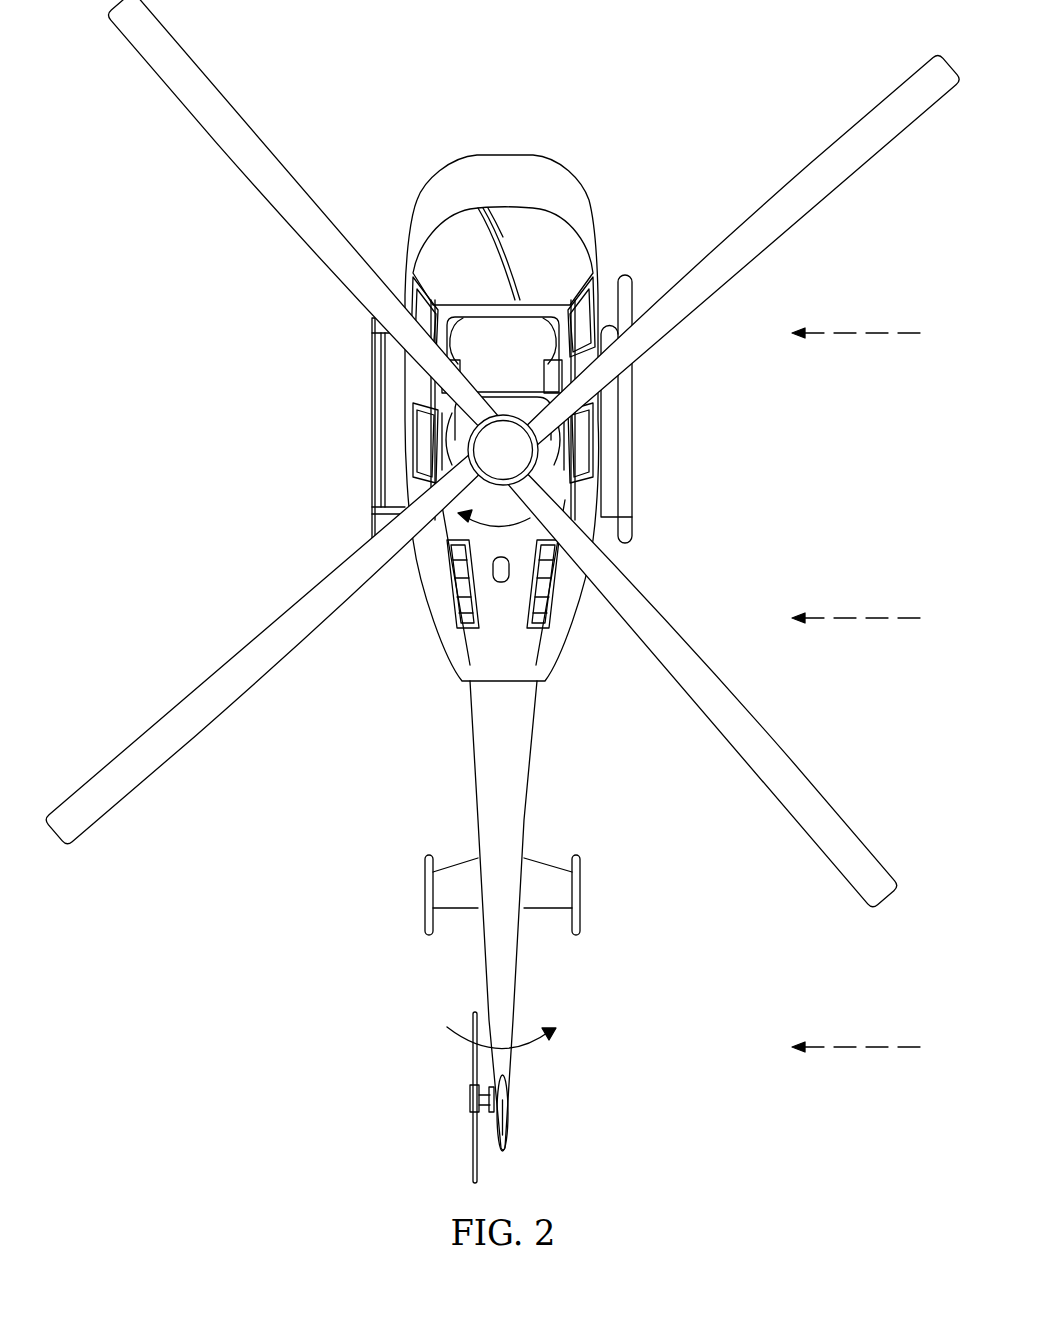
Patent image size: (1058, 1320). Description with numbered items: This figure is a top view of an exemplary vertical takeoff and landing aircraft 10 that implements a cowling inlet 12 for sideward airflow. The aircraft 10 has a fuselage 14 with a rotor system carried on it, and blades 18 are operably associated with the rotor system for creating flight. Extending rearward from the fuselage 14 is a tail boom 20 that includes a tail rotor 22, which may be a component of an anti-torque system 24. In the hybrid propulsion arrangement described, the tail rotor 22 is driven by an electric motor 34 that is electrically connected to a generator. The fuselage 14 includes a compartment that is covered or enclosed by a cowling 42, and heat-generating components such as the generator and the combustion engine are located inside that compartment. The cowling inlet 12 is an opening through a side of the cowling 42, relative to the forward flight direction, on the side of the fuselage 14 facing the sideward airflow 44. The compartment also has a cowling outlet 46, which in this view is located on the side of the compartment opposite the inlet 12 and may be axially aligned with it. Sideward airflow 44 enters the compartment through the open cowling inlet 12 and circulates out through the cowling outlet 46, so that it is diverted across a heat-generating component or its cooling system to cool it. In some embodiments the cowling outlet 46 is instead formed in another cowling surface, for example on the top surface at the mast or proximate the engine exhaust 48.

The VTOL aircraft 10 is at (503, 591).
The cowling inlet 12 is at (545, 320).
The fuselage 14 is at (485, 392).
The blades 18 is at (216, 86).
The tail boom 20 is at (522, 960).
The tail rotor 22 is at (472, 1148).
The anti-torque system 24 is at (647, 1026).
The electric motor 34 is at (508, 1108).
The cowling 42 is at (500, 359).
The sideward airflow 44 is at (862, 333).
The cowling outlet 46 is at (458, 322).
The engine exhaust 48 is at (453, 619).